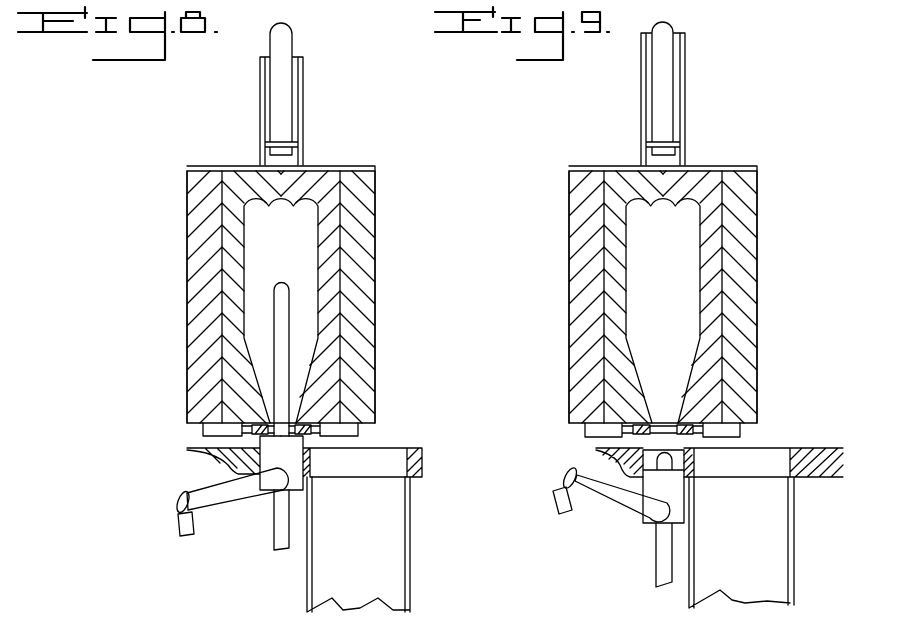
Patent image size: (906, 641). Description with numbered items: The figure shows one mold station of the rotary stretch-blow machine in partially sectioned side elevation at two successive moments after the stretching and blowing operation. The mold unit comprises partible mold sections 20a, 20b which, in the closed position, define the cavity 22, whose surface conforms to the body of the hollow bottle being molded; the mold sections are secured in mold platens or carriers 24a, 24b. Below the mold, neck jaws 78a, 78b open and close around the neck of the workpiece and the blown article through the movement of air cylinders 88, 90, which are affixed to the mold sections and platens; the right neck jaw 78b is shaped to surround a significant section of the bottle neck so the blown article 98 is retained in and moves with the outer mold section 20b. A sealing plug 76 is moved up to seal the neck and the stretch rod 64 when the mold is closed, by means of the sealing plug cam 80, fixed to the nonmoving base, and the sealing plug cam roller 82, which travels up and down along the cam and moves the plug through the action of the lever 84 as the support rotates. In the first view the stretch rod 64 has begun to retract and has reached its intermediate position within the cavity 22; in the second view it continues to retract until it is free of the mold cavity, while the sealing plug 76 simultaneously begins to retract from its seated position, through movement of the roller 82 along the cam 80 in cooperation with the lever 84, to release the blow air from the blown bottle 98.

In FIG. 8, the mold section 20a is at (240, 180).
In FIG. 8, the outer mold section 20b is at (327, 180).
In FIG. 8, the cavity 22 is at (305, 200).
In FIG. 9, the cavity 22 is at (700, 215).
In FIG. 8, the mold platen 24a is at (192, 258).
In FIG. 8, the mold platen 24b is at (368, 228).
In FIG. 8, the stretch rod 64 is at (283, 285).
In FIG. 8, the air cylinder 88 is at (217, 425).
In FIG. 8, the air cylinder 90 is at (343, 430).
In FIG. 8, the neck jaw 78a is at (257, 440).
In FIG. 8, the right neck jaw 78b is at (310, 441).
In FIG. 9, the blown article 98 is at (700, 293).
In FIG. 9, the sealing plug 76 is at (647, 520).
In FIG. 9, the sealing plug cam 80 is at (553, 503).
In FIG. 9, the sealing plug cam roller 82 is at (570, 468).
In FIG. 9, the lever 84 is at (597, 492).